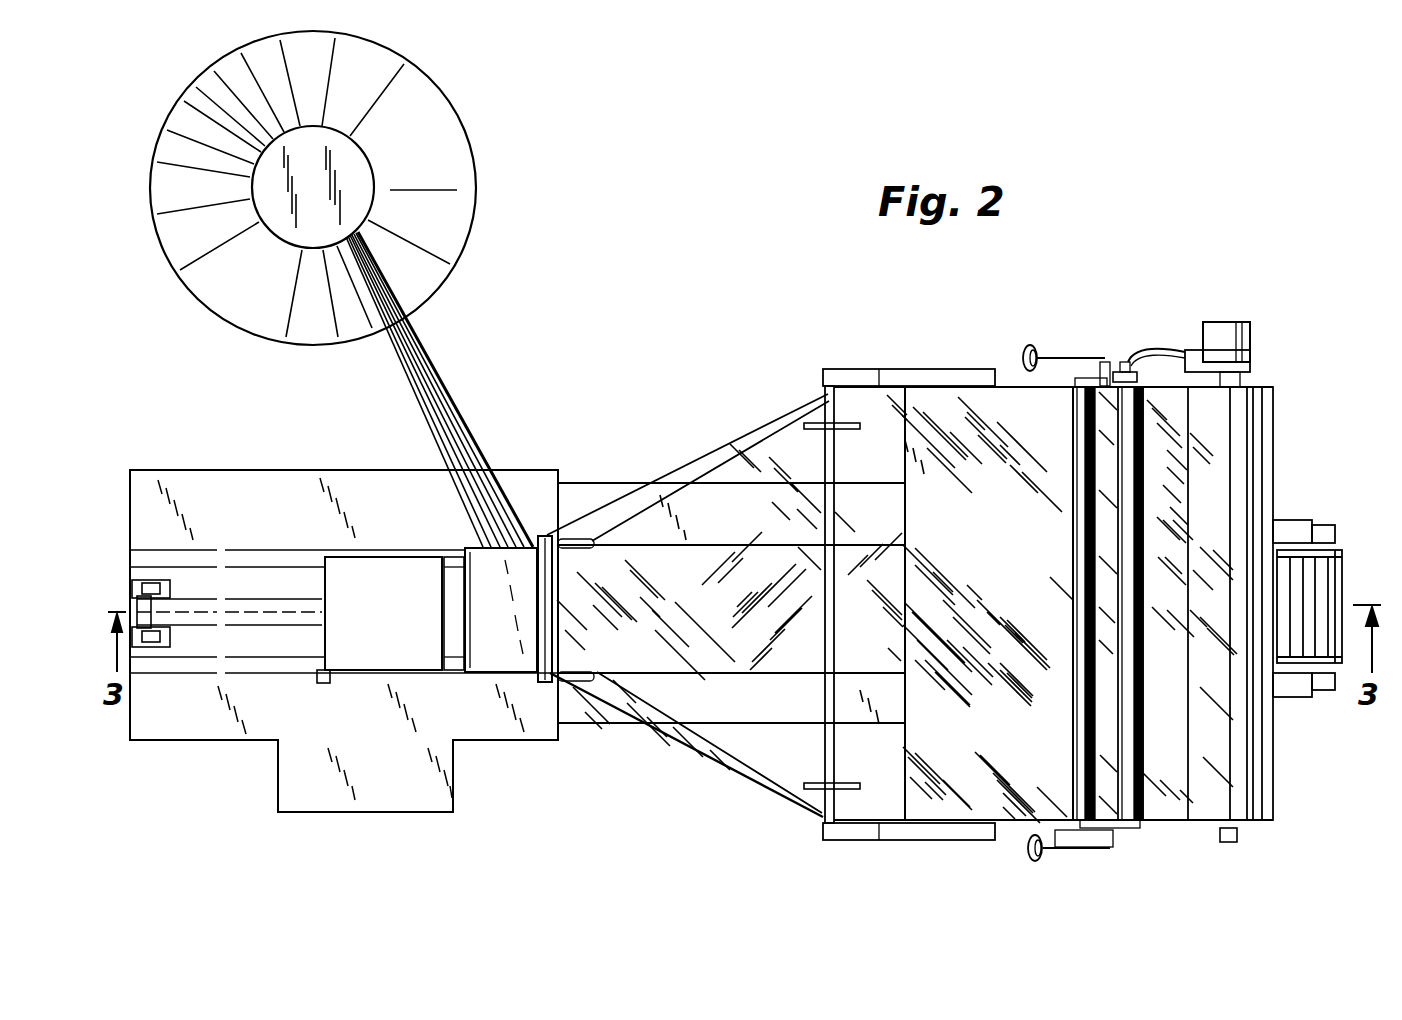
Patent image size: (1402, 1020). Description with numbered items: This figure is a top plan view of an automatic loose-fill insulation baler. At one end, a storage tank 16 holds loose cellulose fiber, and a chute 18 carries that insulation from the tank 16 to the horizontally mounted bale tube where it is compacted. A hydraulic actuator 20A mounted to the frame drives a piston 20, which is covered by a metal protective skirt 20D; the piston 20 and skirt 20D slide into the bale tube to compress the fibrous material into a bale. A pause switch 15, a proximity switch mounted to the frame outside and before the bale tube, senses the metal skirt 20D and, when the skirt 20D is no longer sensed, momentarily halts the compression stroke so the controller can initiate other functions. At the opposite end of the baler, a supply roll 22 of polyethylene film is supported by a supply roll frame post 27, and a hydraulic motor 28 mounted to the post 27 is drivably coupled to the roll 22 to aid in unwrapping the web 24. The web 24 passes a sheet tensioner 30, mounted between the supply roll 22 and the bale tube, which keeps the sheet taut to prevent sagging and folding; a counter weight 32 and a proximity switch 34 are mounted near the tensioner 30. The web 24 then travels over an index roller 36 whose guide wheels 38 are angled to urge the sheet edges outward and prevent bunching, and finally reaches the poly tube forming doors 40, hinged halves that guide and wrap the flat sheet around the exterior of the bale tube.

The pause switch 15 is at (325, 683).
The storage tank 16 is at (477, 172).
The chute 18 is at (444, 372).
The piston 20 is at (468, 613).
The hydraulic actuator 20A is at (257, 607).
The protective skirt 20D is at (408, 628).
The supply roll 22 is at (1273, 453).
The web 24 is at (772, 452).
The supply roll frame post 27 is at (1250, 367).
The hydraulic motor 28 is at (1250, 330).
The sheet tensioner 30 is at (1133, 832).
The counter weight 32 is at (1062, 357).
The proximity switch 34 is at (1128, 355).
The index roller 36 is at (828, 737).
The guide wheels 38 is at (845, 428).
The poly tube forming doors 40 is at (588, 536).